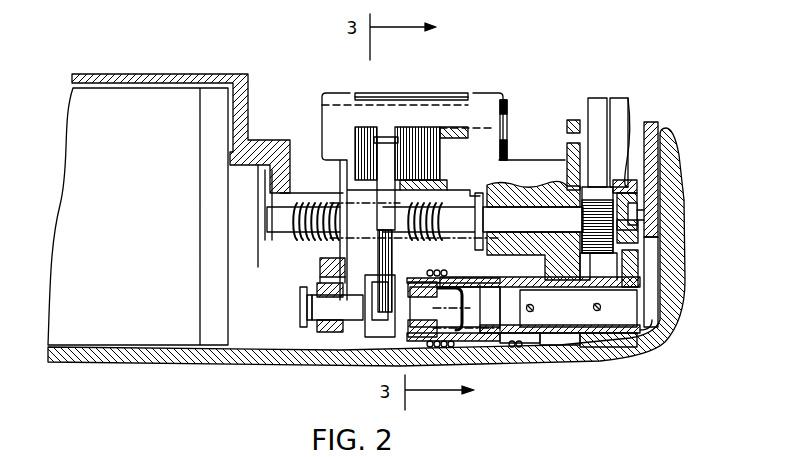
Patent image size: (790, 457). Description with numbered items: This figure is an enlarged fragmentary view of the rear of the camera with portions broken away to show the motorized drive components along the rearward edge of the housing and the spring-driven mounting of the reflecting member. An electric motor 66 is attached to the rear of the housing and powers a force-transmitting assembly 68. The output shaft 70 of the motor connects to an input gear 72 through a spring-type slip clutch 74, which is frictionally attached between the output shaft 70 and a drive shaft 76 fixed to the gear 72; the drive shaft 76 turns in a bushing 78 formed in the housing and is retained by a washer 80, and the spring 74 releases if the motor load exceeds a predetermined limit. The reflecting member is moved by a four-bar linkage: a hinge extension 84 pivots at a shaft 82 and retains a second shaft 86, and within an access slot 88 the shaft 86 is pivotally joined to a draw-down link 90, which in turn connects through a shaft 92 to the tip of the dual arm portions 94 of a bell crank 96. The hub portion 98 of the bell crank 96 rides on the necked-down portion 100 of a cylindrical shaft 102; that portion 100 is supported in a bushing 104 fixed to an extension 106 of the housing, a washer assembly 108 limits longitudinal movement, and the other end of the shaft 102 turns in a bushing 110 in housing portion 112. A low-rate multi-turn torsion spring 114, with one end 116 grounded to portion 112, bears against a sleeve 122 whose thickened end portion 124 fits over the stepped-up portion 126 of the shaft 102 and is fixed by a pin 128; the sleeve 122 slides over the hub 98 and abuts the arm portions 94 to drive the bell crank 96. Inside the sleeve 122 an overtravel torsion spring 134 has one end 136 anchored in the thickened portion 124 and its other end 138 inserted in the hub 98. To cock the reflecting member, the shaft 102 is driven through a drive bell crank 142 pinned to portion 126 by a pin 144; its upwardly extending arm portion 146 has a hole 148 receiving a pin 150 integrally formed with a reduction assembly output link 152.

The electric motor 66 is at (151, 102).
The force-transmitting assembly 68 is at (658, 111).
The output shaft 70 is at (276, 144).
The input gear 72 is at (600, 100).
The spring-type slip clutch 74 is at (337, 206).
The drive shaft 76 is at (496, 205).
The bushing 78 is at (520, 190).
The washer 80 is at (478, 240).
The shaft 82 is at (507, 115).
The hinge extension 84 is at (437, 95).
The shaft 86 is at (360, 158).
The access slot 88 is at (390, 137).
The draw-down link 90 is at (379, 262).
The shaft 92 is at (345, 336).
The dual arm portions 94 is at (394, 340).
The bell crank 96 is at (377, 341).
The hub portion 98 is at (432, 348).
The necked-down portion 100 is at (300, 316).
The cylindrical shaft 102 is at (495, 345).
The bushing 104 is at (320, 336).
The extension 106 is at (325, 271).
The washer assembly 108 is at (300, 301).
The bushing 110 is at (562, 340).
The housing portion 112 is at (550, 160).
The torsion spring 114 is at (507, 342).
The spring end 116 is at (523, 228).
The sleeve 122 is at (478, 343).
The thickened end portion 124 is at (550, 347).
The stepped-up portion 126 is at (607, 342).
The pin 128 is at (626, 320).
The overtravel torsion spring 134 is at (446, 306).
The spring end 136 is at (533, 312).
The spring end 138 is at (426, 279).
The drive bell crank 142 is at (641, 311).
The pin 144 is at (650, 328).
The arm portion 146 is at (641, 272).
The hole 148 is at (631, 102).
The pin 150 is at (639, 209).
The reduction assembly output link 152 is at (659, 126).